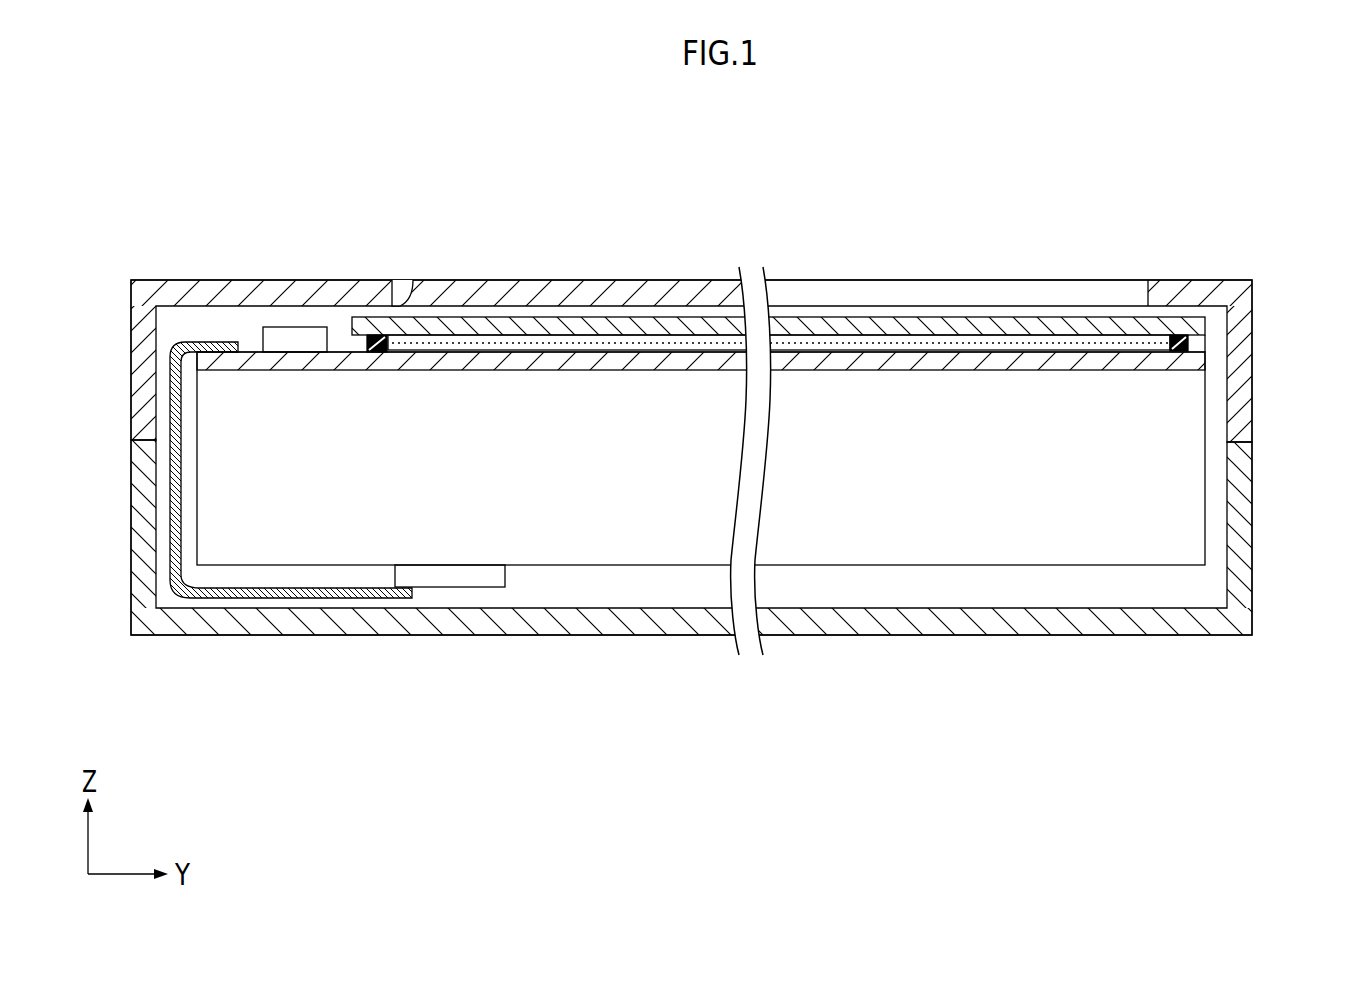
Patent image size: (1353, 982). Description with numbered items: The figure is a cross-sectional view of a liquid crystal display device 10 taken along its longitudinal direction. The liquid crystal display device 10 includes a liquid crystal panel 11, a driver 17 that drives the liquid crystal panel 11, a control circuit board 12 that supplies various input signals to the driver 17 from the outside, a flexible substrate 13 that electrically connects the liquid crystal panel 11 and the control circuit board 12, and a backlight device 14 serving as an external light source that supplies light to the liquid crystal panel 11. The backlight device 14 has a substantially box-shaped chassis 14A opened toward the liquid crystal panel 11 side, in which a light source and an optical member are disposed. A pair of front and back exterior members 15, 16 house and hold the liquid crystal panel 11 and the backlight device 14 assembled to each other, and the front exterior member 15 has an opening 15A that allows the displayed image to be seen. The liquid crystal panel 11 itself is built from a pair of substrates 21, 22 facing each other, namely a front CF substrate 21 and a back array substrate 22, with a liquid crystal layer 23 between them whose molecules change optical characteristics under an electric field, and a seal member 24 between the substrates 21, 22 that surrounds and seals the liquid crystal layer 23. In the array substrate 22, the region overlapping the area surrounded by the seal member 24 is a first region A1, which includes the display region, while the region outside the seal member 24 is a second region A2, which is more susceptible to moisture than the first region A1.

The liquid crystal display device 10 is at (1104, 214).
The liquid crystal panel 11 is at (868, 325).
The control circuit board 12 is at (475, 577).
The flexible substrate 13 is at (171, 342).
The backlight device 14 is at (584, 566).
The chassis 14A is at (680, 510).
The front exterior member 15 is at (1240, 334).
The opening 15A is at (401, 298).
The back exterior member 16 is at (1240, 528).
The driver 17 is at (299, 338).
The CF substrate 21 is at (592, 325).
The array substrate 22 is at (691, 360).
The liquid crystal layer 23 is at (640, 343).
The seal member 24 is at (381, 340).
The first region A1 is at (513, 350).
The second region A2 is at (347, 352).